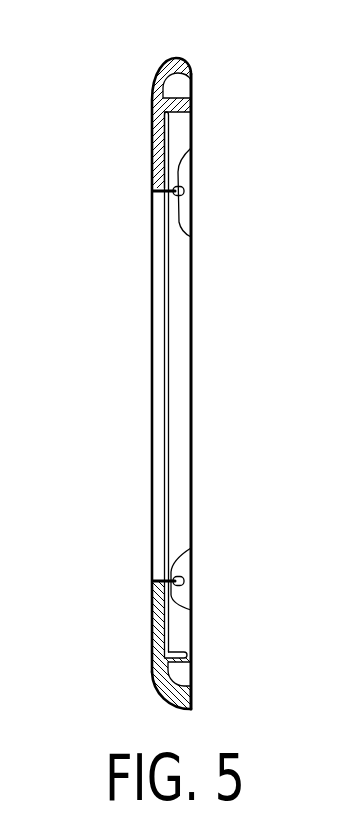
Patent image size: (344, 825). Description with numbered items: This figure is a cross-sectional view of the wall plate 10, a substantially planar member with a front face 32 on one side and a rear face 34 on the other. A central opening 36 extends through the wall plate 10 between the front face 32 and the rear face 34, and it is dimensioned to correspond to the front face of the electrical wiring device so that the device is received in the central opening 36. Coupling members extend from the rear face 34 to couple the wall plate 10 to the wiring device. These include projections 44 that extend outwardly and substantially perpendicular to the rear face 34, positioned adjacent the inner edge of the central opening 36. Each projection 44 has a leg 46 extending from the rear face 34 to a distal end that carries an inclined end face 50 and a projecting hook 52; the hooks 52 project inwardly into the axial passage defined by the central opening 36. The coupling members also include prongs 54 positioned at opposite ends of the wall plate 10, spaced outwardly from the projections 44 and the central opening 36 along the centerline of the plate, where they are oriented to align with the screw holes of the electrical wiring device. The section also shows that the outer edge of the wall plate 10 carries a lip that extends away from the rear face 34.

The wall plate 10 is at (150, 99).
The front face 32 is at (151, 630).
The rear face 34 is at (192, 636).
The central opening 36 is at (152, 347).
The projection 44 is at (184, 193).
The leg 46 is at (192, 152).
The inclined end face 50 is at (191, 562).
The projecting hook 52 is at (192, 235).
The prong 54 is at (192, 86).